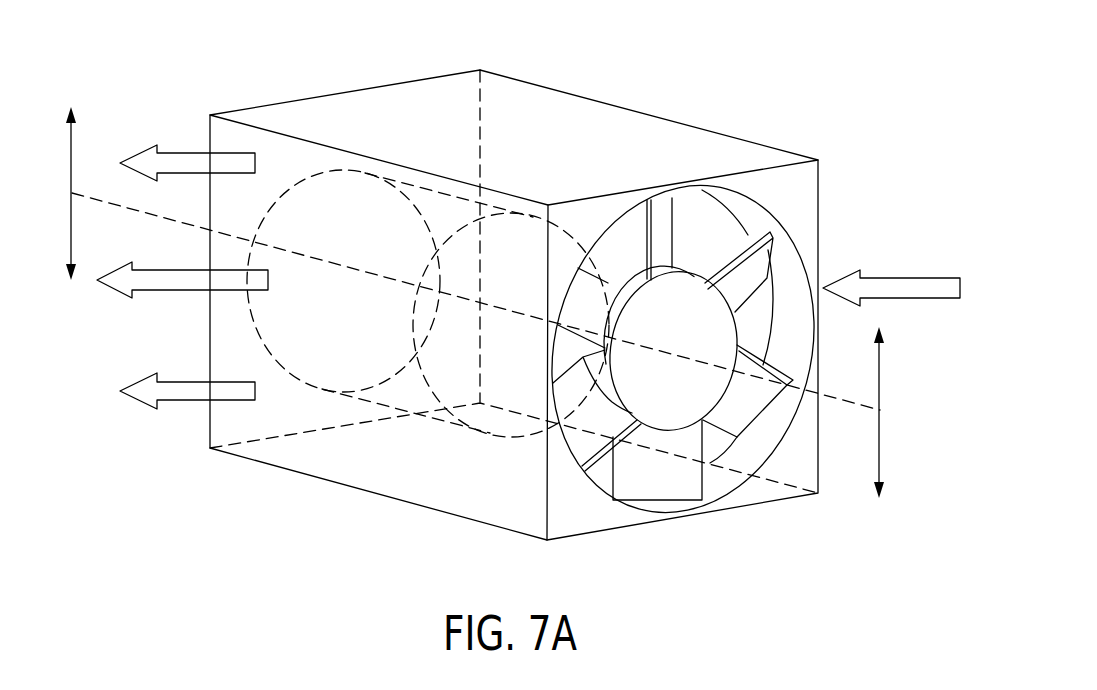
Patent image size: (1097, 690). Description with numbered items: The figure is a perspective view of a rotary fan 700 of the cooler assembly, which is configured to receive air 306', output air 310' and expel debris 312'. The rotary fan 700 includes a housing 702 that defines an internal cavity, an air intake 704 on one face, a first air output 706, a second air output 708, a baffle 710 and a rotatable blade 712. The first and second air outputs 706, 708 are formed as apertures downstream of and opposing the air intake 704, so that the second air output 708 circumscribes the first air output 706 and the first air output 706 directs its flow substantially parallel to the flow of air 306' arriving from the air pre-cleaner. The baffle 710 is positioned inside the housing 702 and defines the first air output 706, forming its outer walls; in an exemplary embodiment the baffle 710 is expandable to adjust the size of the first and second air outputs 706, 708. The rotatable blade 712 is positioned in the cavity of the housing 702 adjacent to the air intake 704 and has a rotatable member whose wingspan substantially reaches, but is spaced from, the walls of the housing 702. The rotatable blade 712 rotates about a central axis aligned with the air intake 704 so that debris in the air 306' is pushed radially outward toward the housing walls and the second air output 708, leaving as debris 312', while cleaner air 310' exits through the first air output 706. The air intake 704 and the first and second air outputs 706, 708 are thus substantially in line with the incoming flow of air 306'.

The rotary fan 700 is at (844, 105).
The housing 702 is at (574, 124).
The air intake 704 is at (836, 237).
The first air output 706 is at (297, 326).
The second air output 708 is at (248, 413).
The baffle 710 is at (432, 395).
The rotatable blade 712 is at (660, 480).
The air 306' is at (891, 331).
The output air 310' is at (169, 307).
The debris 312' is at (179, 269).